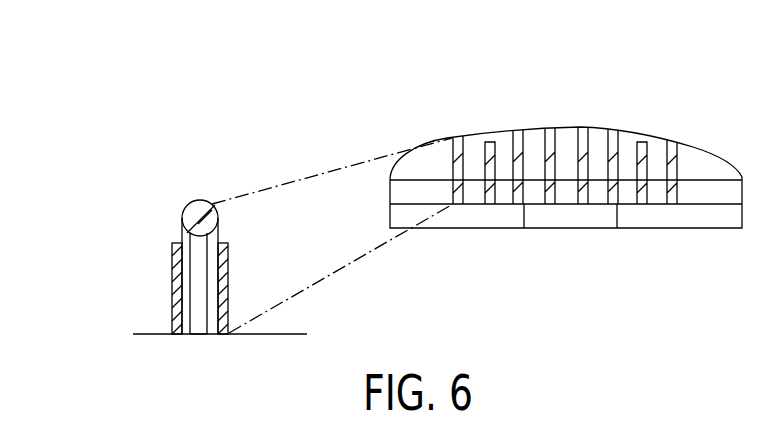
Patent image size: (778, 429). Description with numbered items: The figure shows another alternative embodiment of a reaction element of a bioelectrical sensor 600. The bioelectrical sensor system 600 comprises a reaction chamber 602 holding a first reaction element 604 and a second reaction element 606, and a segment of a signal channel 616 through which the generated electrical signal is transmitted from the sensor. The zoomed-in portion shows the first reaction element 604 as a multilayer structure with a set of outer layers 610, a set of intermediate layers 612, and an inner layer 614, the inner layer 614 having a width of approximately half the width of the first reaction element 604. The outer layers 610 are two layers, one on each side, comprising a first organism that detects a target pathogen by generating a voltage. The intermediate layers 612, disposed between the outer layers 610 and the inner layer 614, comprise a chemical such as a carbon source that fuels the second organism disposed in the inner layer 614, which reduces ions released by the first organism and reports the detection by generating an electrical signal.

The bioelectrical sensor 600 is at (100, 108).
The reaction chamber 602 is at (532, 128).
The first reaction element 604 is at (460, 157).
The second reaction element 606 is at (491, 150).
The set of outer layers 610 is at (175, 300).
The set of intermediate layers 612 is at (185, 240).
The inner layer 614 is at (196, 318).
The signal channel 616 is at (283, 334).